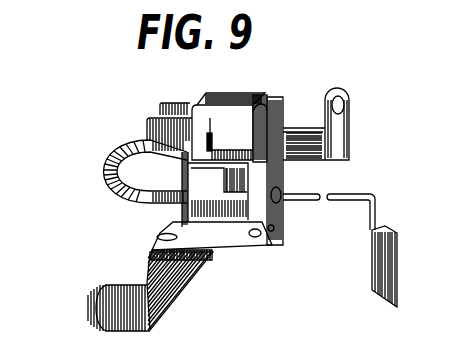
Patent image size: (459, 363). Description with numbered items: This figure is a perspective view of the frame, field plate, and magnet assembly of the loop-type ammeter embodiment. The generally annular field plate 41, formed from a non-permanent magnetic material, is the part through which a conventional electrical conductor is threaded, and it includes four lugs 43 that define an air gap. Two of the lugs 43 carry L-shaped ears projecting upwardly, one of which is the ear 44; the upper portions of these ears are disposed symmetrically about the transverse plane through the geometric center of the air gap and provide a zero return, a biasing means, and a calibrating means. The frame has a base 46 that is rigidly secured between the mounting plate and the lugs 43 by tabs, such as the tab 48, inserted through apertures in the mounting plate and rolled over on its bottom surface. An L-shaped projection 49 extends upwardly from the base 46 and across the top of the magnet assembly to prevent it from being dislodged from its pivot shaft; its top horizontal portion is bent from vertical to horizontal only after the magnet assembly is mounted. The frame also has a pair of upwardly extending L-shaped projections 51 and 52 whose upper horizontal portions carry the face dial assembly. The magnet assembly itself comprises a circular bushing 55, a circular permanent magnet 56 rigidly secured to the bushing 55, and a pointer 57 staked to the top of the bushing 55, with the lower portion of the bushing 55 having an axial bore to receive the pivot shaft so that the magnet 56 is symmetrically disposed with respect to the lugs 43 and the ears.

The field plate 41 is at (102, 163).
The lugs 43 is at (192, 192).
The L-shaped ear 44 is at (206, 113).
The base 46 is at (184, 268).
The tab 48 is at (133, 282).
The L-shaped projection 49 is at (284, 110).
The L-shaped projection 51 is at (285, 186).
The L-shaped projection 52 is at (342, 90).
The bushing 55 is at (228, 146).
The permanent magnet 56 is at (254, 110).
The pointer 57 is at (350, 194).